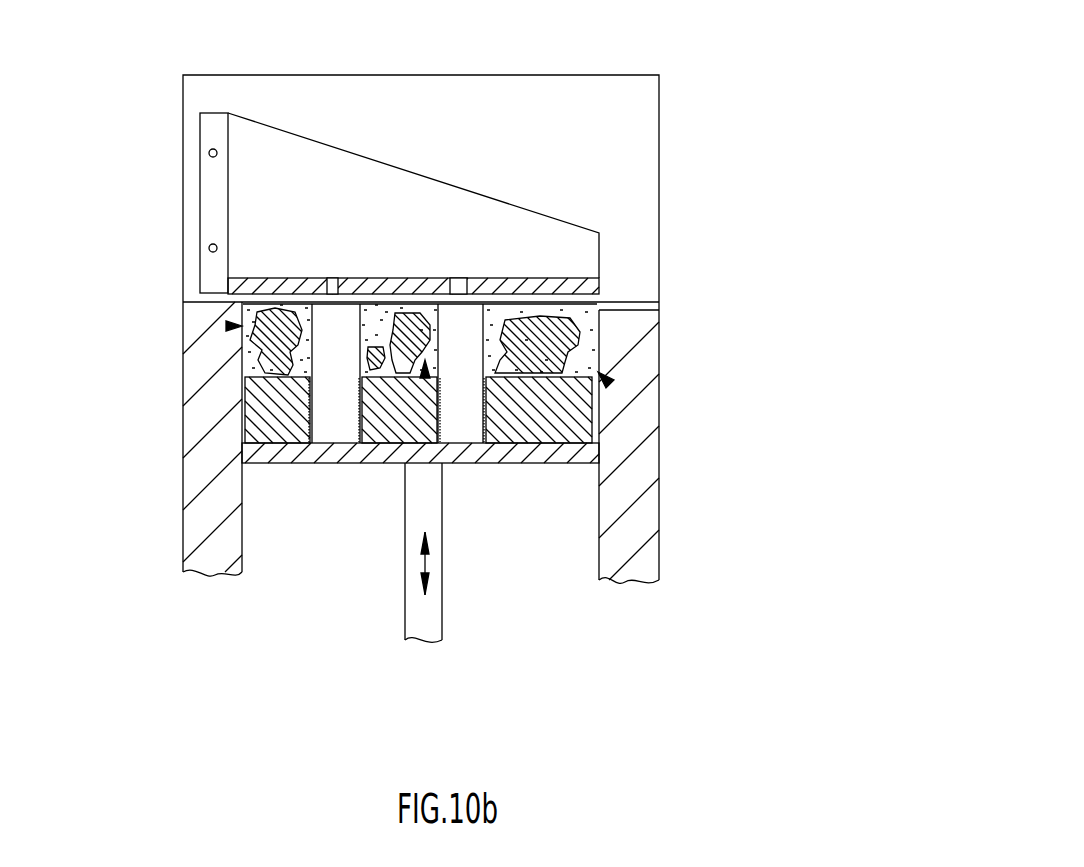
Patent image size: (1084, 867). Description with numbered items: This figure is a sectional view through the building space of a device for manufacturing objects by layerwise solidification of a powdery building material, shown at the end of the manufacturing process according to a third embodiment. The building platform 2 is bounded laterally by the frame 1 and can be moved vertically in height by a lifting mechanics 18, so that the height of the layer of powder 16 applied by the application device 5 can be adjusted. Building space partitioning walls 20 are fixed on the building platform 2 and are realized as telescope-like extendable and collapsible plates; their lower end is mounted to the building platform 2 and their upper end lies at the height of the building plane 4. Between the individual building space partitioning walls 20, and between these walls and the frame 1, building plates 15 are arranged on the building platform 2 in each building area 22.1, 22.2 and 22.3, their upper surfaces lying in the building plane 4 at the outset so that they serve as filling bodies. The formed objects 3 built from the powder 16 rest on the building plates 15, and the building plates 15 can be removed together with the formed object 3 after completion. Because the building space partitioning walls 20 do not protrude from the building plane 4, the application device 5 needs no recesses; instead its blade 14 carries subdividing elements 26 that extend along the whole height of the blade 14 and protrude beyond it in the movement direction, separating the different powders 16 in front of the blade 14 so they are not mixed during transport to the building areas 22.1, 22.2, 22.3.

The frame 1 is at (215, 527).
The building platform 2 is at (568, 450).
The formed object 3 is at (433, 377).
The building plane 4 is at (625, 322).
The application device 5 is at (520, 217).
The blade 14 is at (540, 283).
The building plate 15 is at (393, 427).
The powder 16 is at (377, 317).
The lifting mechanics 18 is at (430, 568).
The building space partitioning wall 20 is at (452, 340).
The building area 22.1 is at (228, 326).
The building area 22.2 is at (425, 368).
The building area 22.3 is at (606, 380).
The subdividing element 26 is at (462, 290).